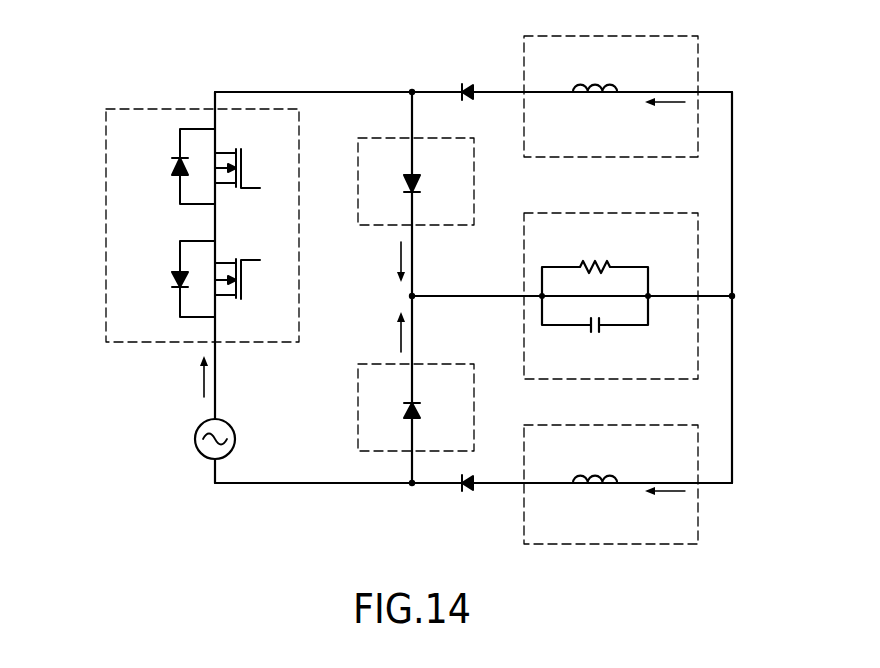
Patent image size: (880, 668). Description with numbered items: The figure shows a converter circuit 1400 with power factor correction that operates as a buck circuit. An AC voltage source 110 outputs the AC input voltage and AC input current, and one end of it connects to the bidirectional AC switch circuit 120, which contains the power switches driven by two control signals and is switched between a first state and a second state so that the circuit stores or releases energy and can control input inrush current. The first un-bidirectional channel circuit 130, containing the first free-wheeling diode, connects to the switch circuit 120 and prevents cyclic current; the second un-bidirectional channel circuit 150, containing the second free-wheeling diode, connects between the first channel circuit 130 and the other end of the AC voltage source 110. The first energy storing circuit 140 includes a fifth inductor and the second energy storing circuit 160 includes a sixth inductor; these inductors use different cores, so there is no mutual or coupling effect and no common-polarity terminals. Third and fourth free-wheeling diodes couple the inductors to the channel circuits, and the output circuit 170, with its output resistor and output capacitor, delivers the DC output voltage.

The converter circuit 1400 is at (100, 39).
The AC voltage source 110 is at (232, 423).
The bidirectional AC switch circuit 120 is at (195, 109).
The first un-bidirectional channel circuit 130 is at (390, 138).
The first energy storing circuit 140 is at (698, 63).
The second un-bidirectional channel circuit 150 is at (390, 451).
The second energy storing circuit 160 is at (698, 445).
The output circuit 170 is at (698, 243).